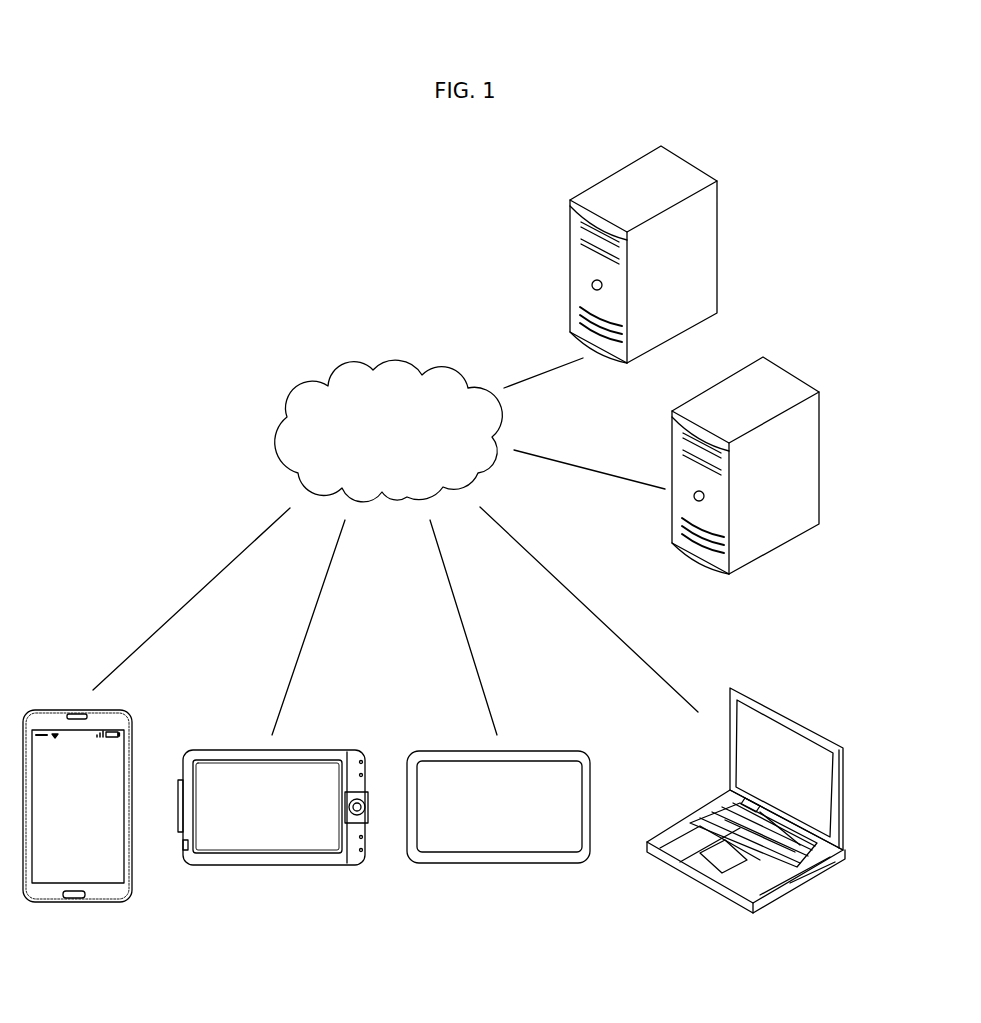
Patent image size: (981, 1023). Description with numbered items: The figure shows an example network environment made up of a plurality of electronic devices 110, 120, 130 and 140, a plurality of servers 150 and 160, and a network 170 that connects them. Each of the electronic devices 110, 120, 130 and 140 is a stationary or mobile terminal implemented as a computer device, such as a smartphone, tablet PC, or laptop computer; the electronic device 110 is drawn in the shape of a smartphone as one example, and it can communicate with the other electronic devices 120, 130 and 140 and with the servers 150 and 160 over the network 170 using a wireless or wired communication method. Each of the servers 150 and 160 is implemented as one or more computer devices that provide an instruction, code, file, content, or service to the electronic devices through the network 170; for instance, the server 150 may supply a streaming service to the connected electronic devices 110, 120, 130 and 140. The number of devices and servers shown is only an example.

The electronic device 110 is at (78, 900).
The electronic device 120 is at (273, 865).
The electronic device 130 is at (498, 863).
The electronic device 140 is at (845, 802).
The server 150 is at (820, 456).
The server 160 is at (717, 245).
The network 170 is at (393, 358).